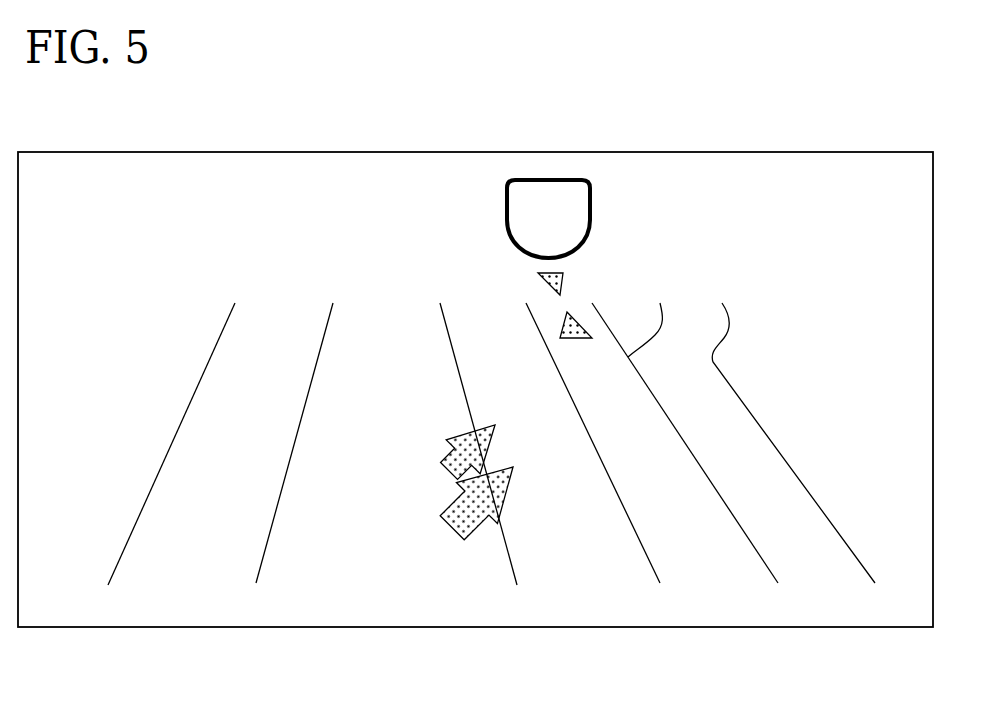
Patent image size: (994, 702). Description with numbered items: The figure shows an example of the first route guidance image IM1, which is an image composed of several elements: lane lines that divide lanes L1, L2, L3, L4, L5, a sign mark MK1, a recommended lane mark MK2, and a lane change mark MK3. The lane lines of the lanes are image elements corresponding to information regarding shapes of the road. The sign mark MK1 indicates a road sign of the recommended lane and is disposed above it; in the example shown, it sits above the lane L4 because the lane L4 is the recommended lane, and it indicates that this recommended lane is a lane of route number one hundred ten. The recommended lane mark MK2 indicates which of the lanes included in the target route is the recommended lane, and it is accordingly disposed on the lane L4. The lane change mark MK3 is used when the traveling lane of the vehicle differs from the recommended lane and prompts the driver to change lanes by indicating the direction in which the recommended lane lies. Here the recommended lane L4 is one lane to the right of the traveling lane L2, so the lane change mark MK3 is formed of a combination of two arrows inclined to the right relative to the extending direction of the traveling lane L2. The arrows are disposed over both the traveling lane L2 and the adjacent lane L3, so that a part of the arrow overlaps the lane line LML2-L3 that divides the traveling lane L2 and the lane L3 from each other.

The first route guidance image IM1 is at (890, 152).
The lane L1 is at (205, 593).
The traveling lane L2 is at (403, 593).
The lane L3 is at (606, 593).
The recommended lane L4 is at (731, 593).
The lane L5 is at (839, 593).
The lane line LML2-L3 is at (511, 568).
The sign mark MK1 is at (565, 162).
The recommended lane mark MK2 is at (585, 352).
The lane change mark MK3 is at (425, 470).